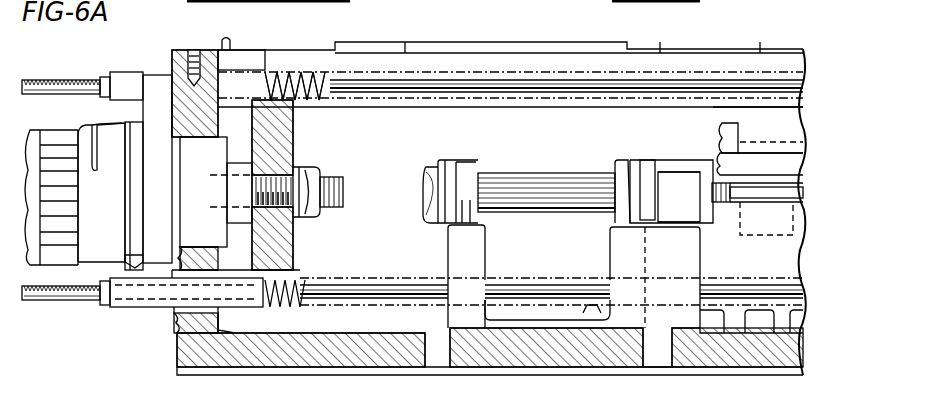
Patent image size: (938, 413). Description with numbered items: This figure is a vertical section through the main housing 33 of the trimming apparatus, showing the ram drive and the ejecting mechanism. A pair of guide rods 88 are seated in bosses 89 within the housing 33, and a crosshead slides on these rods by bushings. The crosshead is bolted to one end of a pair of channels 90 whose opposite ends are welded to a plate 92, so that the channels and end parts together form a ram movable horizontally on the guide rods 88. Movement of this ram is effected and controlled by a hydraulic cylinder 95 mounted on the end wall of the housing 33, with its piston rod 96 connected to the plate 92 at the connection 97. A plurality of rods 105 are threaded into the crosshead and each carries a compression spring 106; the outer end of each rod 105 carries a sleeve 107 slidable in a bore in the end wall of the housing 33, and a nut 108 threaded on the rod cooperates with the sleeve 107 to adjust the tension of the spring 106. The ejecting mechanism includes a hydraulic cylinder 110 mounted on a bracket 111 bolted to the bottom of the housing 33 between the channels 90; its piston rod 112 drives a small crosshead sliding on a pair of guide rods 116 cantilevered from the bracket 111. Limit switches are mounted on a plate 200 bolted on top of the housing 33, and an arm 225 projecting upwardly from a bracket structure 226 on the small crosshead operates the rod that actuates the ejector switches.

The housing 33 is at (188, 362).
The guide rods 88 is at (685, 0).
The bosses 89 is at (773, 0).
The channels 90 is at (786, 119).
The plate 92 is at (287, 135).
The hydraulic cylinder 95 is at (53, 152).
The piston rod 96 is at (240, 168).
The connection 97 is at (287, 197).
The rods 105 is at (363, 82).
The compression spring 106 is at (282, 72).
The sleeve 107 is at (132, 76).
The nut 108 is at (105, 76).
The hydraulic cylinder 110 is at (513, 182).
The bracket 111 is at (617, 250).
The piston rod 112 is at (760, 190).
The guide rods 116 is at (718, 204).
The plate 200 is at (530, 43).
The arm 225 is at (730, 133).
The bracket structure 226 is at (725, 165).